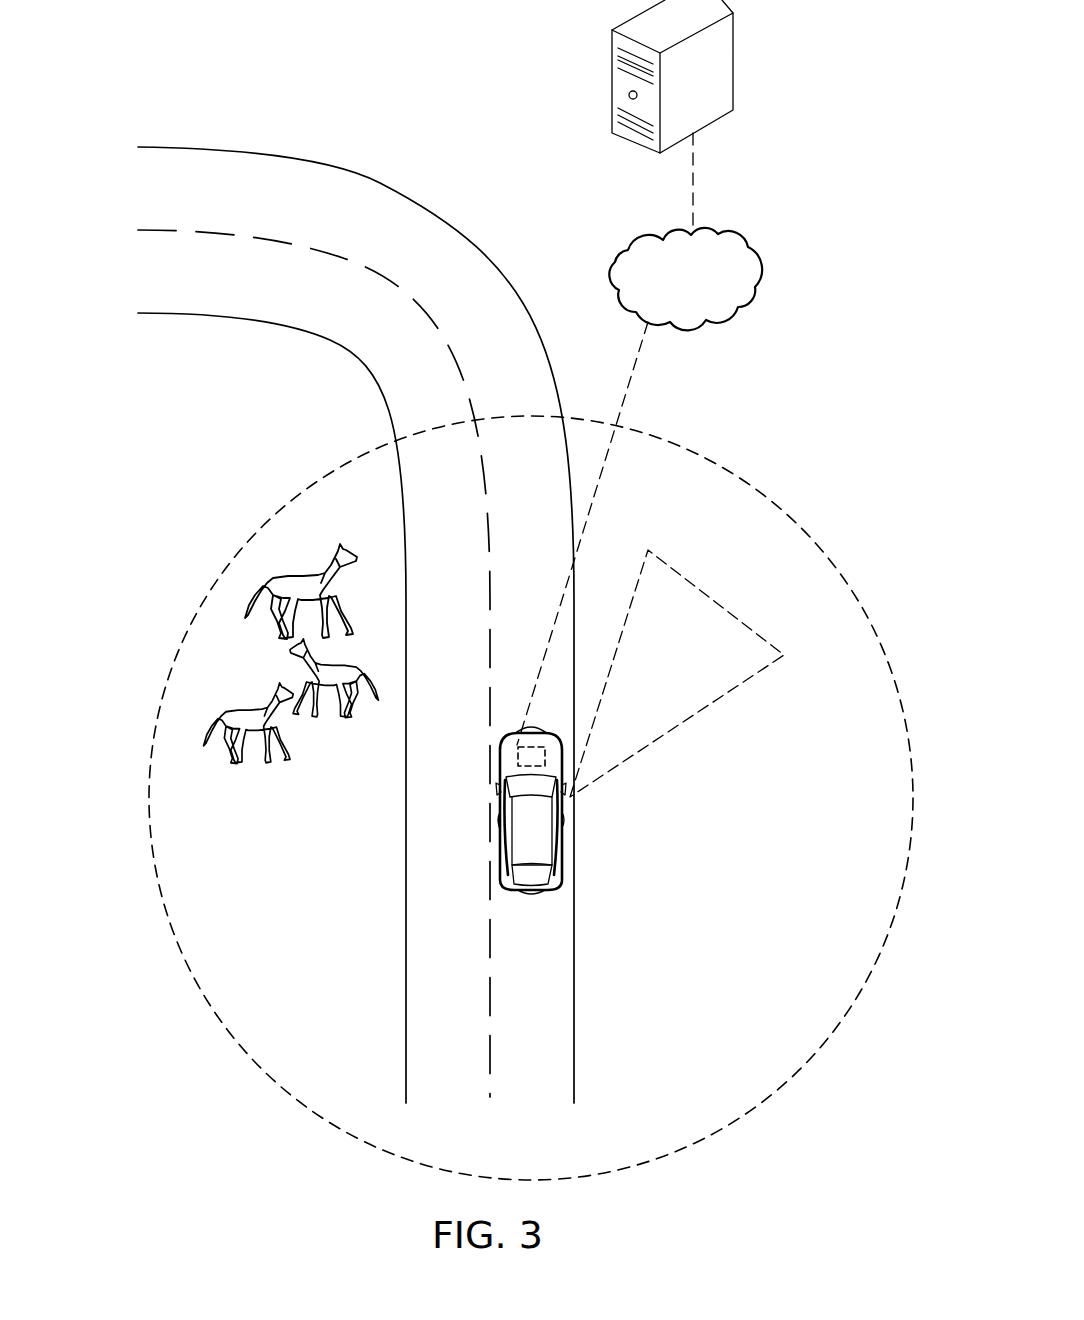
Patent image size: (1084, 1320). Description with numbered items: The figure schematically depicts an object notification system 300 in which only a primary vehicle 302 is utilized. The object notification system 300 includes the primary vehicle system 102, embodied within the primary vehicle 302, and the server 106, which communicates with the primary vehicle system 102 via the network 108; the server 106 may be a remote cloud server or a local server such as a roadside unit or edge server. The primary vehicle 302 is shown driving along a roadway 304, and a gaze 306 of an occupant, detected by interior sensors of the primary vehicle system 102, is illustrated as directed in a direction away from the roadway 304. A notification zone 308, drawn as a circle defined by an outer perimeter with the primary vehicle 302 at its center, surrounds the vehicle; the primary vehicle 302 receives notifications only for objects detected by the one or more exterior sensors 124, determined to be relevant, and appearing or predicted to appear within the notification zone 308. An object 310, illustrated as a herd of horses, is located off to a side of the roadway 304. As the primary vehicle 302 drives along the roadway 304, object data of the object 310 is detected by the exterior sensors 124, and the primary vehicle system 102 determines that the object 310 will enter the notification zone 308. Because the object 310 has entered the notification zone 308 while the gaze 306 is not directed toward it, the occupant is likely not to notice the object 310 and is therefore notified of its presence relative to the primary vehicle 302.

The object notification system 300 is at (150, 118).
The primary vehicle 302 is at (546, 834).
The roadway 304 is at (290, 158).
The gaze 306 is at (678, 722).
The notification zone 308 is at (752, 487).
The object 310 is at (314, 775).
The primary vehicle system 102 is at (518, 752).
The exterior sensors 124 is at (498, 815).
The server 106 is at (733, 62).
The network 108 is at (762, 257).